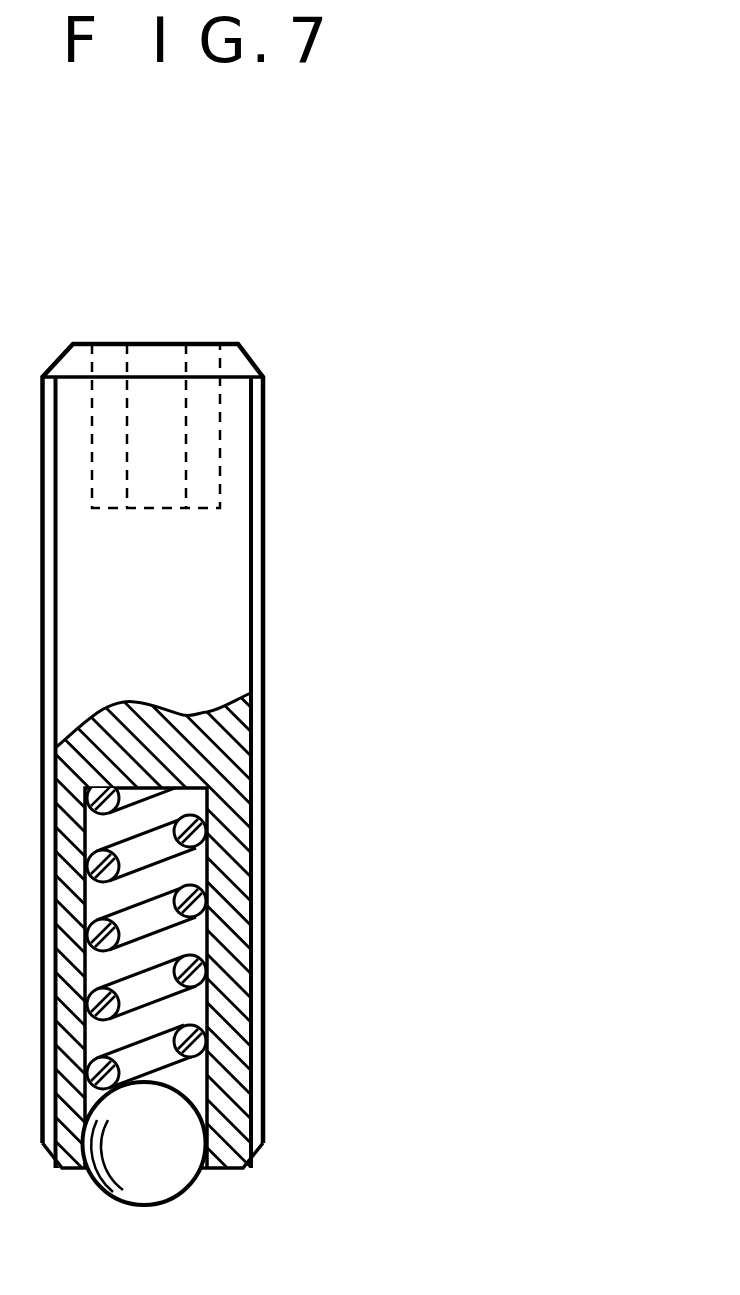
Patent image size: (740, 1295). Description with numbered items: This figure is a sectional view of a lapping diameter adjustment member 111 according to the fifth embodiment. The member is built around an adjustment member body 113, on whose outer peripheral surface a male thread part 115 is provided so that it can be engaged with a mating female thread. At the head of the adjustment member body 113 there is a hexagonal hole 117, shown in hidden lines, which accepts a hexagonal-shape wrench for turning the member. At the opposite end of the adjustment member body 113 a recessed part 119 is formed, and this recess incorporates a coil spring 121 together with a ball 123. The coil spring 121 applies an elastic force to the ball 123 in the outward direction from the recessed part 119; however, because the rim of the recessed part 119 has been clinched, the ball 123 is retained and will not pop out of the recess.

The lapping diameter adjustment member 111 is at (292, 491).
The adjustment member body 113 is at (225, 628).
The male thread part 115 is at (258, 678).
The hexagonal hole 117 is at (98, 410).
The recessed part 119 is at (203, 966).
The coil spring 121 is at (197, 900).
The ball 123 is at (160, 1132).